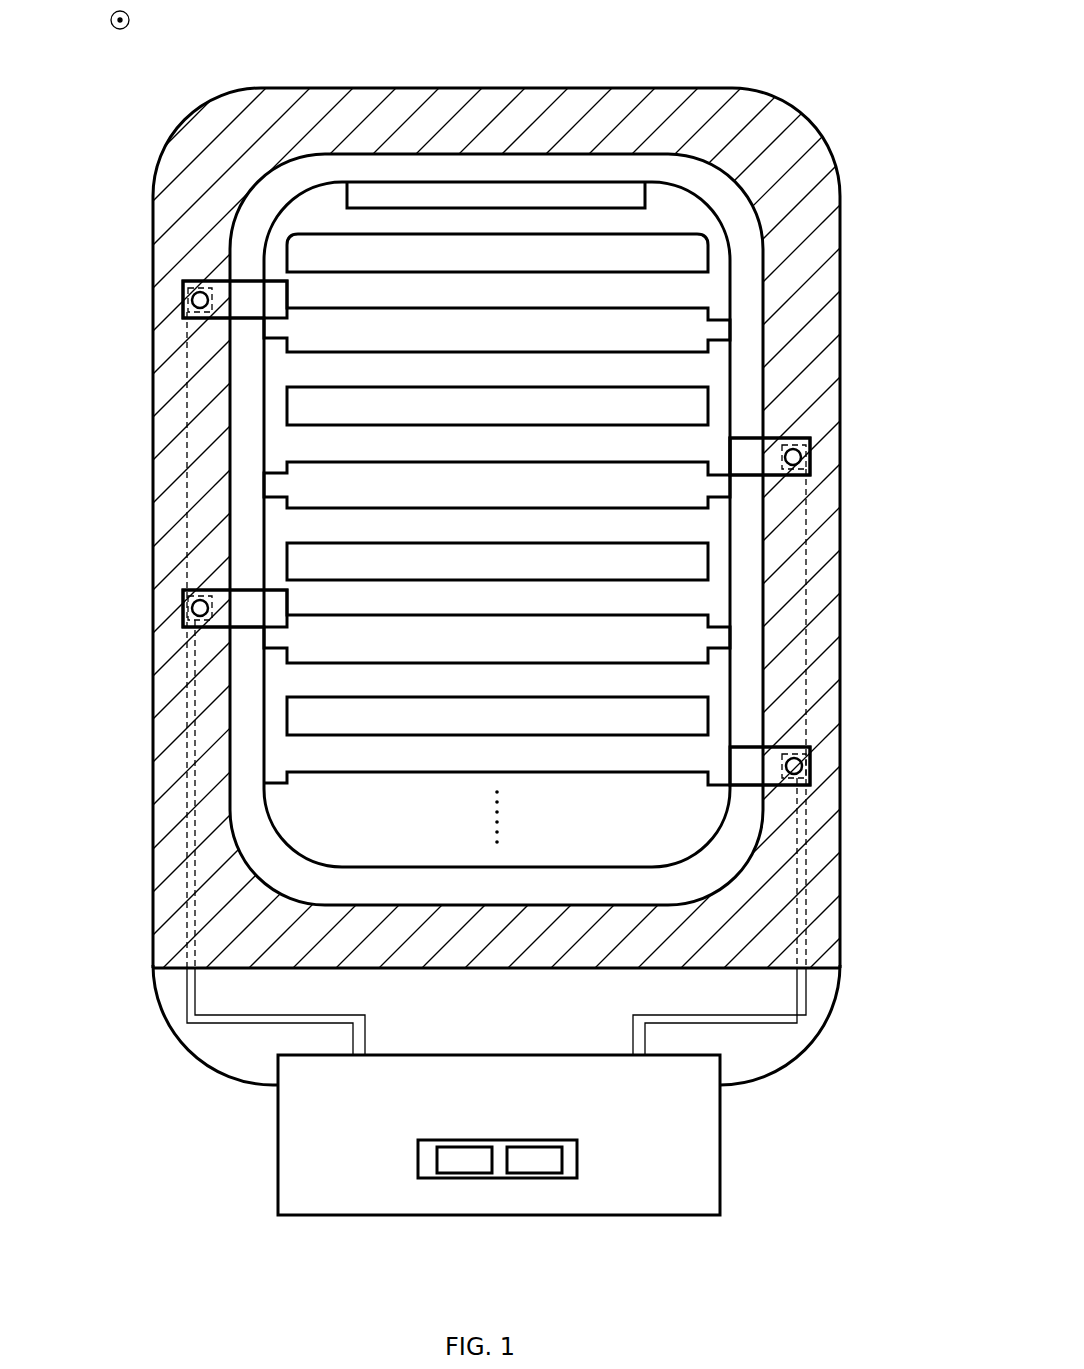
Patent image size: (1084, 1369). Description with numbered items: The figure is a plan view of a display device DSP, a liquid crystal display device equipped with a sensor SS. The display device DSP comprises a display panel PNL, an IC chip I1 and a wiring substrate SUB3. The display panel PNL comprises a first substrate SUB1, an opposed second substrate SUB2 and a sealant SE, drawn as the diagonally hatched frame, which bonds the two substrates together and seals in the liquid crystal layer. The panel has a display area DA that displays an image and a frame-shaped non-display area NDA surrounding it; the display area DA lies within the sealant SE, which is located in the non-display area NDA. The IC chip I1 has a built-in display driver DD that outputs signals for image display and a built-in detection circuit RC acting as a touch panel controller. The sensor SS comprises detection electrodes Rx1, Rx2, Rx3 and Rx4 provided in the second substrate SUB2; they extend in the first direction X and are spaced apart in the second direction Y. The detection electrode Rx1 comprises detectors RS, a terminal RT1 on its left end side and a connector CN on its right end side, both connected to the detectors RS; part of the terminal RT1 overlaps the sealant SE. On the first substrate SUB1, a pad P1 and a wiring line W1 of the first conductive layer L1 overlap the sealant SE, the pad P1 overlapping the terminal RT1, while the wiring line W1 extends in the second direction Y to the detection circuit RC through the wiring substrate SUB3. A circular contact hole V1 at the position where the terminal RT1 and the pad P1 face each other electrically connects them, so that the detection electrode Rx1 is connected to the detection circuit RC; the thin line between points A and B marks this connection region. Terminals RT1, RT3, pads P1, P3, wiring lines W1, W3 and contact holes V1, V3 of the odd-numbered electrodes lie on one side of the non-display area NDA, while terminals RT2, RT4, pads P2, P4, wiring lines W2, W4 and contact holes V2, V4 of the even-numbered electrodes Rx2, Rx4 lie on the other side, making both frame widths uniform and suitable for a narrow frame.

The display device DSP is at (832, 120).
The display panel PNL is at (193, 1065).
The sealant SE is at (165, 887).
The sensor SS is at (770, 254).
The first substrate SUB1 is at (198, 1040).
The second substrate SUB2 is at (247, 968).
The wiring substrate SUB3 is at (503, 1217).
The display area DA is at (276, 803).
The non-display area NDA is at (252, 845).
The connector CN is at (675, 212).
The detectors RS is at (533, 290).
The detection electrode Rx1 is at (745, 293).
The detection electrode Rx2 is at (745, 373).
The detection electrode Rx3 is at (745, 568).
The detection electrode Rx4 is at (745, 689).
The terminal RT1 is at (217, 280).
The terminal RT2 is at (797, 438).
The terminal RT3 is at (200, 590).
The terminal RT4 is at (800, 747).
The contact hole V1 is at (192, 302).
The contact hole V2 is at (802, 455).
The contact hole V3 is at (192, 608).
The contact hole V4 is at (802, 765).
The pad P1 is at (196, 318).
The pad P2 is at (808, 482).
The pad P3 is at (196, 626).
The pad P4 is at (808, 790).
The wiring line W1 is at (187, 402).
The wiring line W2 is at (807, 517).
The wiring line W3 is at (195, 700).
The wiring line W4 is at (805, 825).
The first conductive layer L1 is at (98, 347).
The point A is at (280, 300).
The point B is at (293, 297).
The IC chip I1 is at (577, 1162).
The display driver DD is at (462, 1145).
The detection circuit RC is at (533, 1145).
The first direction X is at (130, 20).
The second direction Y is at (120, 30).